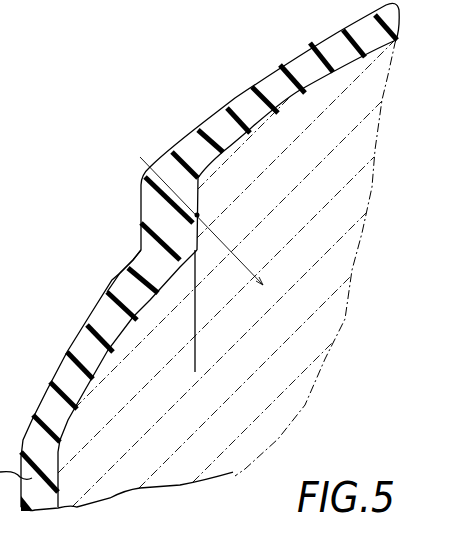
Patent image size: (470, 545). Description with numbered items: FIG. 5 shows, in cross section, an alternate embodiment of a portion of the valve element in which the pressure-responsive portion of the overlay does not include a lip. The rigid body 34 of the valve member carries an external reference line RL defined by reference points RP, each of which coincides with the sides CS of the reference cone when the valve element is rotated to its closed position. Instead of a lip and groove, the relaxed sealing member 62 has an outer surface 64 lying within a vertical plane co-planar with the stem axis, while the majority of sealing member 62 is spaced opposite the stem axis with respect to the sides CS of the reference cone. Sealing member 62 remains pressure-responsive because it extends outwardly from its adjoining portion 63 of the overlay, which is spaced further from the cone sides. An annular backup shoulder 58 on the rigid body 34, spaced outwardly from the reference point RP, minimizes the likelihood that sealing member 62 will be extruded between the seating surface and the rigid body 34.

The rigid body 34 is at (313, 384).
The annular backup shoulder 58 is at (223, 152).
The relaxed sealing member 62 is at (155, 202).
The adjoining portion of the overlay 63 is at (128, 268).
The outer surface 64 is at (140, 222).
The reference point RP is at (197, 215).
The sides of the reference cone CS is at (258, 281).
The external reference line RL is at (195, 360).